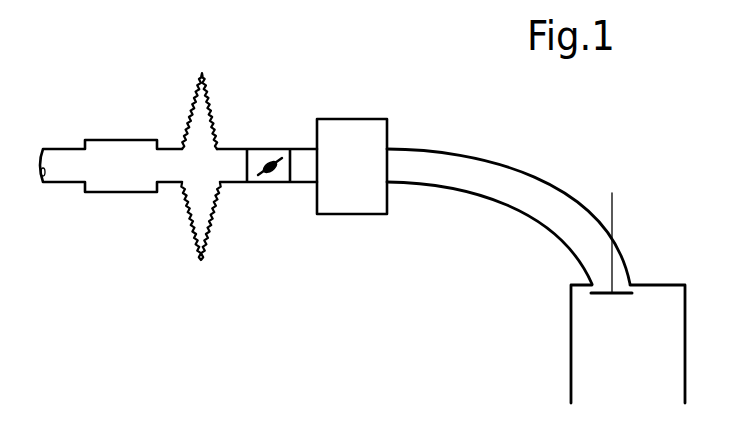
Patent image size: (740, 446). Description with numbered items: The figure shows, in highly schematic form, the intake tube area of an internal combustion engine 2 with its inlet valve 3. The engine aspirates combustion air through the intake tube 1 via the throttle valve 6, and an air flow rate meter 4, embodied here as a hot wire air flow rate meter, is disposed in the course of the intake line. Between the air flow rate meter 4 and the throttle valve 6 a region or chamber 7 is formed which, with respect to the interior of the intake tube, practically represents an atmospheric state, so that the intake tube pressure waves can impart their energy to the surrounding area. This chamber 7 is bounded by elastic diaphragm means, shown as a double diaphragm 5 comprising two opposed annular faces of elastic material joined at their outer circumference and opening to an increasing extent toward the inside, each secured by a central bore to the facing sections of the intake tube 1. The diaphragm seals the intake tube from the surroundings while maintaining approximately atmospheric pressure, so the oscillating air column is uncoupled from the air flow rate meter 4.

The intake tube 1 is at (465, 177).
The internal combustion engine 2 is at (587, 340).
The inlet valve 3 is at (612, 258).
The air flow rate meter 4 is at (117, 153).
The double diaphragm 5 is at (192, 113).
The throttle valve 6 is at (272, 161).
The chamber 7 is at (186, 210).